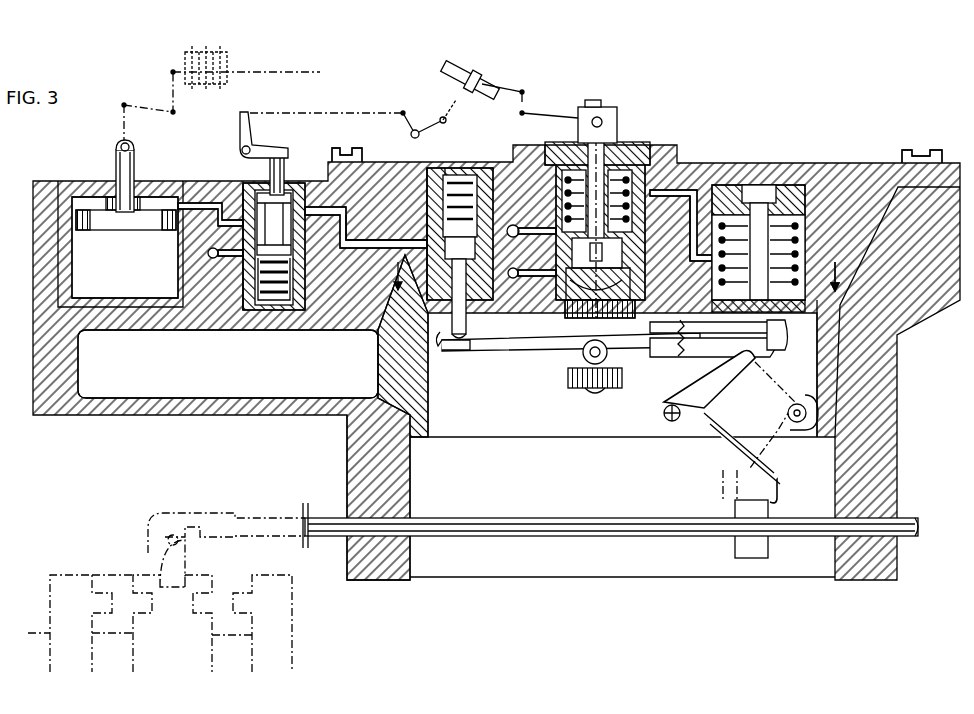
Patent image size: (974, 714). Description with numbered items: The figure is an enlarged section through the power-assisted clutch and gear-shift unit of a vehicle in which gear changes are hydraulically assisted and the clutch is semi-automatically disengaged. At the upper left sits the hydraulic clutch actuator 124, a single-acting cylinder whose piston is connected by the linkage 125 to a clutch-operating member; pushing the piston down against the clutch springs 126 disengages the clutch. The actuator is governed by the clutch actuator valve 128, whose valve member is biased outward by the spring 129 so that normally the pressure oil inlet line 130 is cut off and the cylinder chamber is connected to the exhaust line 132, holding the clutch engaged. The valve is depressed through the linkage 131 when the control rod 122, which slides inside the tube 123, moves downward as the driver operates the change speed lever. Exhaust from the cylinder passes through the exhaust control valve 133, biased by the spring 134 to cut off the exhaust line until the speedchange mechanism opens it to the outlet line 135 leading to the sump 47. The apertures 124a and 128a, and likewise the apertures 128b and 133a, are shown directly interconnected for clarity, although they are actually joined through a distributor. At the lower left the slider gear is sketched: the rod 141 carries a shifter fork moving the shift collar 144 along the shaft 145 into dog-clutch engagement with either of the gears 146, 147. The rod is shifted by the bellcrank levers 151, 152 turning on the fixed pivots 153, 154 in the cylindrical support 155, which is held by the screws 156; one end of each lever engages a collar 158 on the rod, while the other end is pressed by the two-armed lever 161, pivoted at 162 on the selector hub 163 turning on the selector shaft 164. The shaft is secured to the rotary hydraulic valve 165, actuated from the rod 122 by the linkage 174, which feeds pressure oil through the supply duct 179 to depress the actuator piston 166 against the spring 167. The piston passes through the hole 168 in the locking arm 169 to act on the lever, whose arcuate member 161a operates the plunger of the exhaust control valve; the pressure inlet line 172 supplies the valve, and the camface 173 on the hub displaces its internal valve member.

The sump 47 is at (116, 400).
The rod 122 is at (428, 114).
The tube 123 is at (472, 68).
The hydraulic clutch actuator 124 is at (125, 228).
The aperture 124a is at (190, 200).
The linkage 125 is at (150, 112).
The clutch springs 126 is at (203, 62).
The clutch actuator valve 128 is at (292, 186).
The aperture 128a is at (236, 198).
The aperture 128b is at (326, 250).
The spring 129 is at (268, 318).
The pressure oil inlet line 130 is at (213, 258).
The linkage 131 is at (352, 104).
The exhaust line 132 is at (388, 246).
The exhaust control valve 133 is at (524, 219).
The aperture 133a is at (432, 166).
The spring 134 is at (466, 166).
The outlet line 135 is at (342, 325).
The slidable rod 141 is at (812, 524).
The shift collar 144 is at (172, 650).
The shaft 145 is at (110, 648).
The gear 146 is at (66, 575).
The gear 147 is at (292, 618).
The bellcrank lever 151 is at (712, 412).
The bellcrank lever 152 is at (782, 394).
The fixed pivot 153 is at (664, 414).
The fixed pivot 154 is at (788, 414).
The cylindrical support 155 is at (425, 403).
The screws 156 is at (350, 155).
The collar 158 is at (735, 504).
The two-armed lever 161 is at (532, 352).
The arcuate member 161a is at (444, 350).
The pivot 162 is at (590, 390).
The selector hub 163 is at (562, 330).
The selector shaft 164 is at (598, 108).
The rotary hydraulic valve 165 is at (645, 142).
The actuator piston 166 is at (788, 188).
The spring 167 is at (808, 250).
The hole 168 is at (786, 341).
The locking arm 169 is at (660, 358).
The pressure inlet line 172 is at (514, 280).
The camface 173 is at (648, 276).
The linkage 174 is at (524, 104).
The supply duct 179 is at (690, 172).